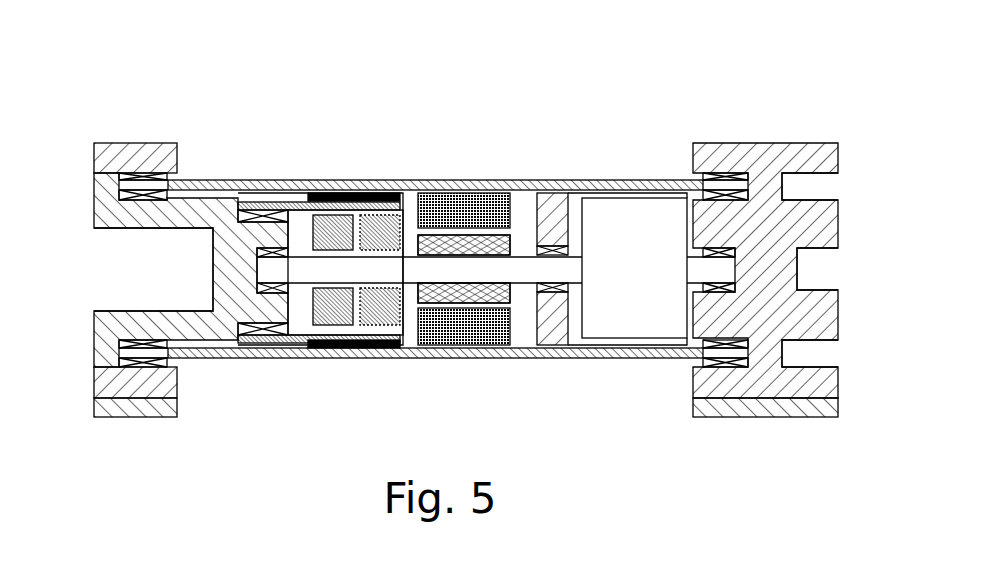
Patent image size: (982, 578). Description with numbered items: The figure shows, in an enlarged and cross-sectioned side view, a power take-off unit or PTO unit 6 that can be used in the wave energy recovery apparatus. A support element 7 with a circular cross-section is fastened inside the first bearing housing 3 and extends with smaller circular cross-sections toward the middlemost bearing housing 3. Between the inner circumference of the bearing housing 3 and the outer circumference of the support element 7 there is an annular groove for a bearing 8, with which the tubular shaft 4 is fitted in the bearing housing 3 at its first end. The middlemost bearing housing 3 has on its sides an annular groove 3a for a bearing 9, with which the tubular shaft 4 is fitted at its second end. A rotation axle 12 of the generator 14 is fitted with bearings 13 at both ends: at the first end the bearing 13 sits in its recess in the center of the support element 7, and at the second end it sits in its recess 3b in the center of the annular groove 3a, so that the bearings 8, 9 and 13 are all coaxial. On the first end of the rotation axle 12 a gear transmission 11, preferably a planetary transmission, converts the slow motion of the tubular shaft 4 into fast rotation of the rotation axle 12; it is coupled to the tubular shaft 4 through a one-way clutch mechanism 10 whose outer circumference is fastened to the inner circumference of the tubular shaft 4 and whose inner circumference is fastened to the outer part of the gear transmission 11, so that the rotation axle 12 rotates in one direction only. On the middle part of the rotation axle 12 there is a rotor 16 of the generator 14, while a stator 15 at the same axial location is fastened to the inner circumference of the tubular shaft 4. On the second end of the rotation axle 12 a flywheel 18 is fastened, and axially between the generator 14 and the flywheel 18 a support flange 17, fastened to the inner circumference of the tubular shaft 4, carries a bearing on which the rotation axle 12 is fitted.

The bearing housing 3 is at (135, 143).
The annular groove 3a is at (832, 185).
The recess 3b is at (832, 268).
The tubular shaft 4 is at (640, 358).
The PTO unit 6 is at (527, 82).
The support element 7 is at (100, 330).
The bearing 8 is at (120, 194).
The bearing 9 is at (722, 175).
The one-way clutch mechanism 10 is at (305, 192).
The gear transmission 11 is at (296, 345).
The rotation axle 12 is at (580, 285).
The bearing 13 is at (255, 260).
The generator 14 is at (468, 172).
The stator 15 is at (468, 345).
The rotor 16 is at (513, 295).
The support flange 17 is at (556, 180).
The flywheel 18 is at (630, 205).